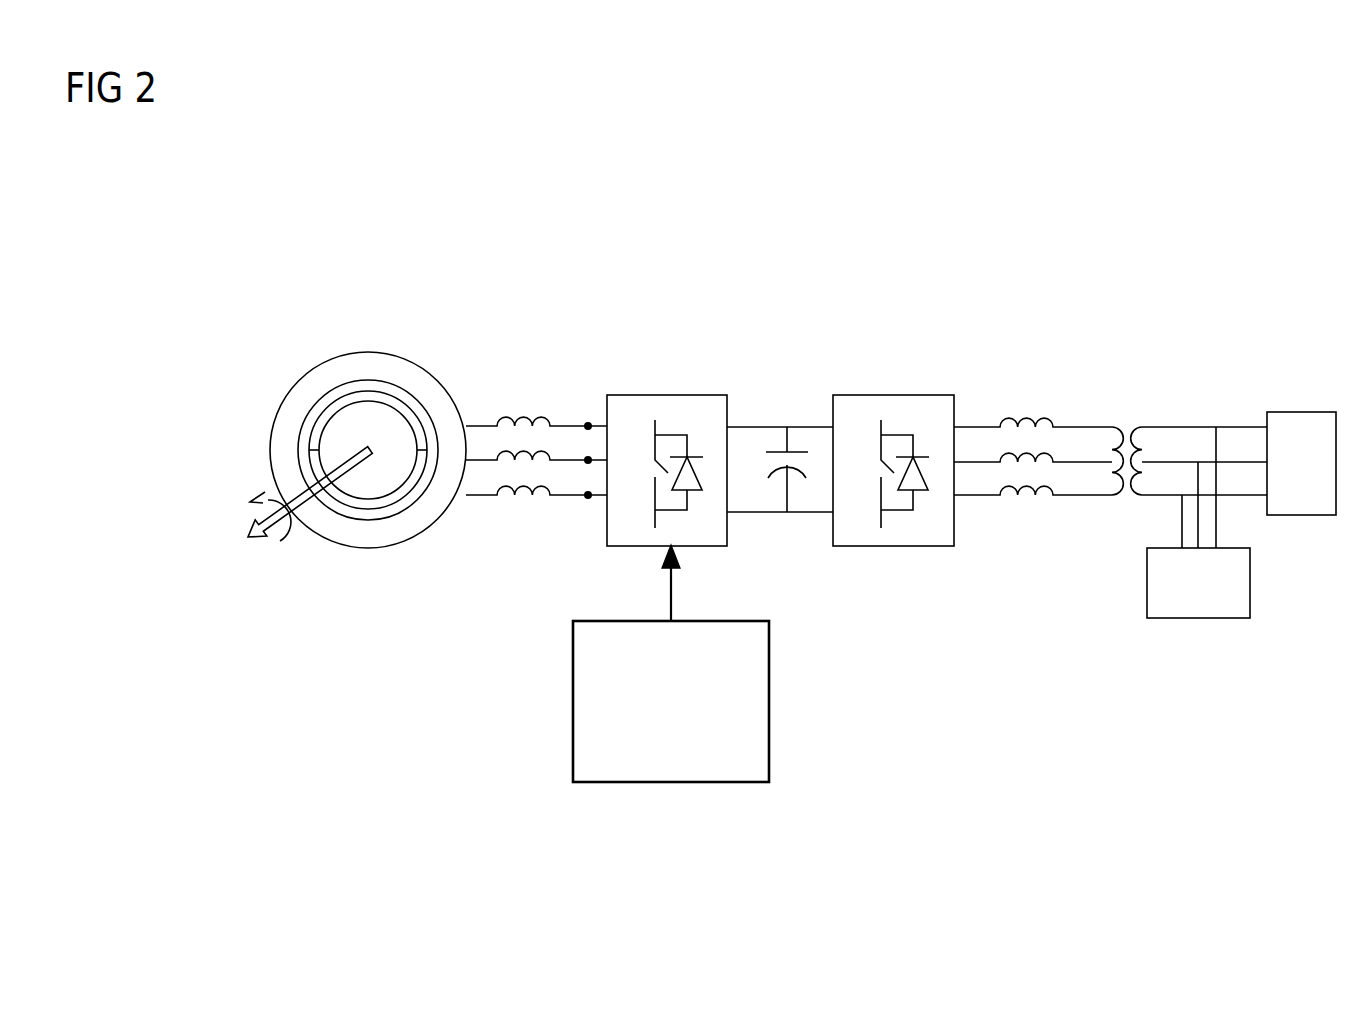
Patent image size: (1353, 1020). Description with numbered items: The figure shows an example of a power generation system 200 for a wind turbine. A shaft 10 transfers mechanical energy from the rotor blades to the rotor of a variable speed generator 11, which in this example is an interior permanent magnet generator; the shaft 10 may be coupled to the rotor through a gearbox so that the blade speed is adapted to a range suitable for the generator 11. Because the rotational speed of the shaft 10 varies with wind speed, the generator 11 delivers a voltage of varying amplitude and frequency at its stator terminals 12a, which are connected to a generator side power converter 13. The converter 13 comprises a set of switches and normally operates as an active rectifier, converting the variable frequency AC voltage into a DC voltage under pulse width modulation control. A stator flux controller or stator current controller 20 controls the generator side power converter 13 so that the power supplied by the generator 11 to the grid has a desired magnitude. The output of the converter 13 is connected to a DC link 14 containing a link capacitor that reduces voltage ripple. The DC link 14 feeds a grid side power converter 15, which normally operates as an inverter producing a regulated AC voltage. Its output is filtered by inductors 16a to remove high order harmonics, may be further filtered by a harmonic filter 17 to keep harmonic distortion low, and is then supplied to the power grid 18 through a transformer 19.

The power generation system 200 is at (1205, 208).
The shaft 10 is at (255, 545).
The variable speed generator 11 is at (298, 378).
The stator terminal 12a is at (573, 495).
The generator side power converter 13 is at (682, 410).
The DC link 14 is at (790, 427).
The grid side power converter 15 is at (903, 412).
The inductor 16a is at (1042, 495).
The harmonic filter 17 is at (1183, 598).
The power grid 18 is at (1303, 427).
The transformer 19 is at (1130, 435).
The stator flux controller or stator current controller 20 is at (702, 782).